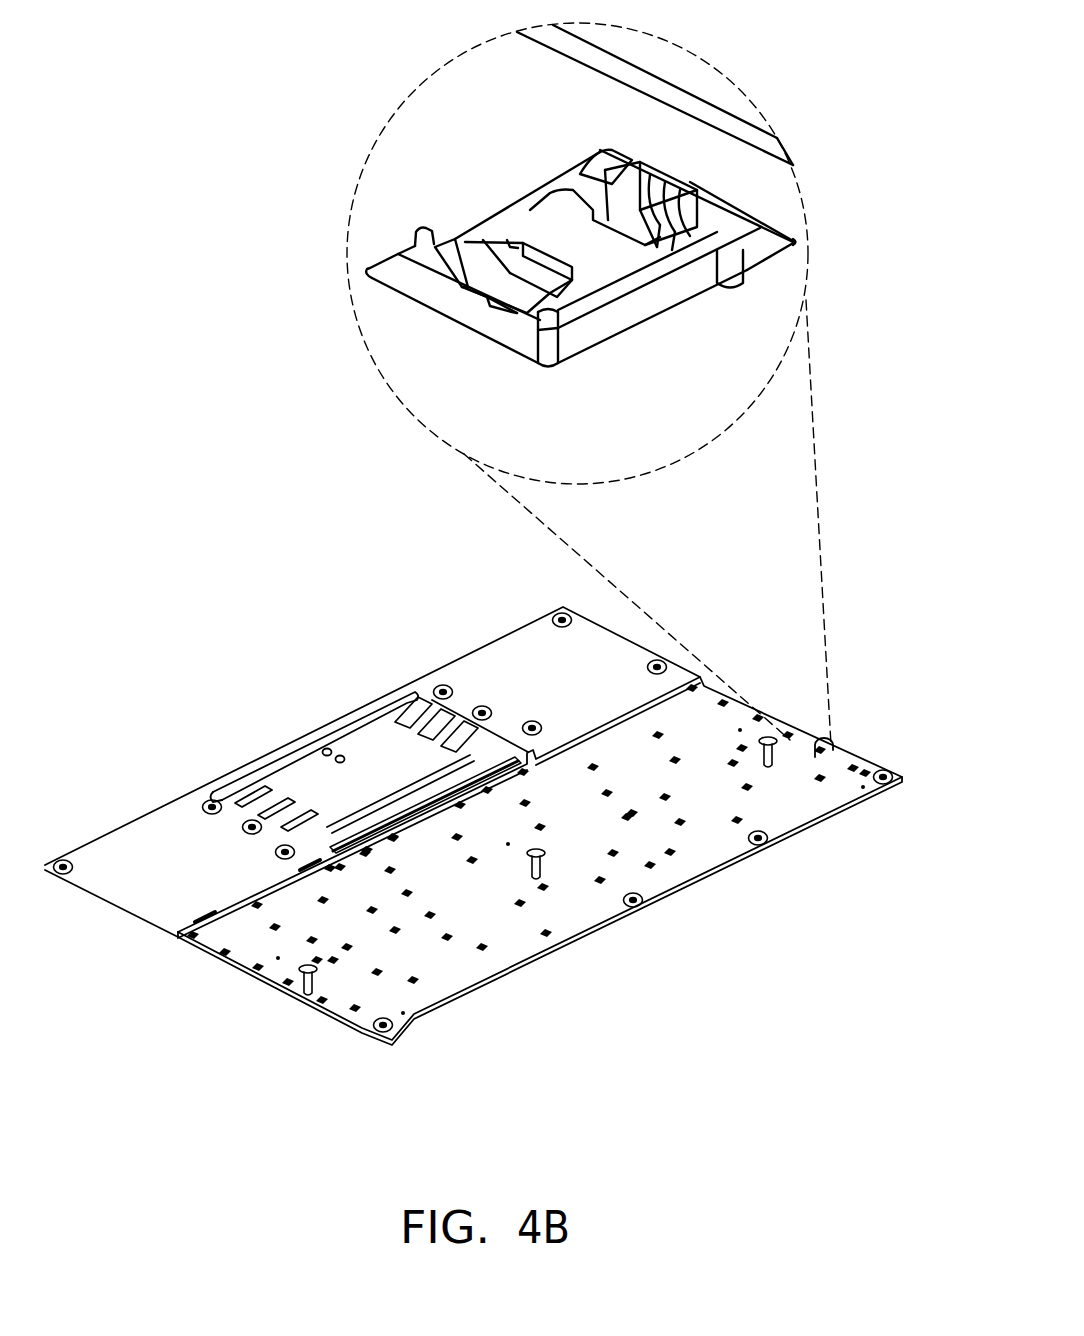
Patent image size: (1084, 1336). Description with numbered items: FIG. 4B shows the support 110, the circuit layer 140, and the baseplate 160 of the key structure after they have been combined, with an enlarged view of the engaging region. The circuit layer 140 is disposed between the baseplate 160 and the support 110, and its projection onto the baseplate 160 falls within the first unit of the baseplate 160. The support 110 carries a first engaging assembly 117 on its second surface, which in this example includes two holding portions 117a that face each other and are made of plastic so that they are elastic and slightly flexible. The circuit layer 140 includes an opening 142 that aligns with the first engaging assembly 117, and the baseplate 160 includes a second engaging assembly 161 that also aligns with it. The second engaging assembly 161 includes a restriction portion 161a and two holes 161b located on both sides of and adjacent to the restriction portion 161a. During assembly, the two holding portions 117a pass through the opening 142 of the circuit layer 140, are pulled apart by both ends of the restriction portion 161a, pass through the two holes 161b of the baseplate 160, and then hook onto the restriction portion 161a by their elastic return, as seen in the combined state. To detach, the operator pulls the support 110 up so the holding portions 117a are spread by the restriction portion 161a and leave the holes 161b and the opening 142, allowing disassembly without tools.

The support 110 is at (575, 288).
The first engaging assembly 117 is at (531, 214).
The holding portion 117a is at (637, 170).
The circuit layer 140 is at (815, 226).
The opening 142 is at (735, 222).
The baseplate 160 is at (460, 367).
The second engaging assembly 161 is at (566, 229).
The restriction portion 161a is at (627, 257).
The hole 161b is at (723, 198).